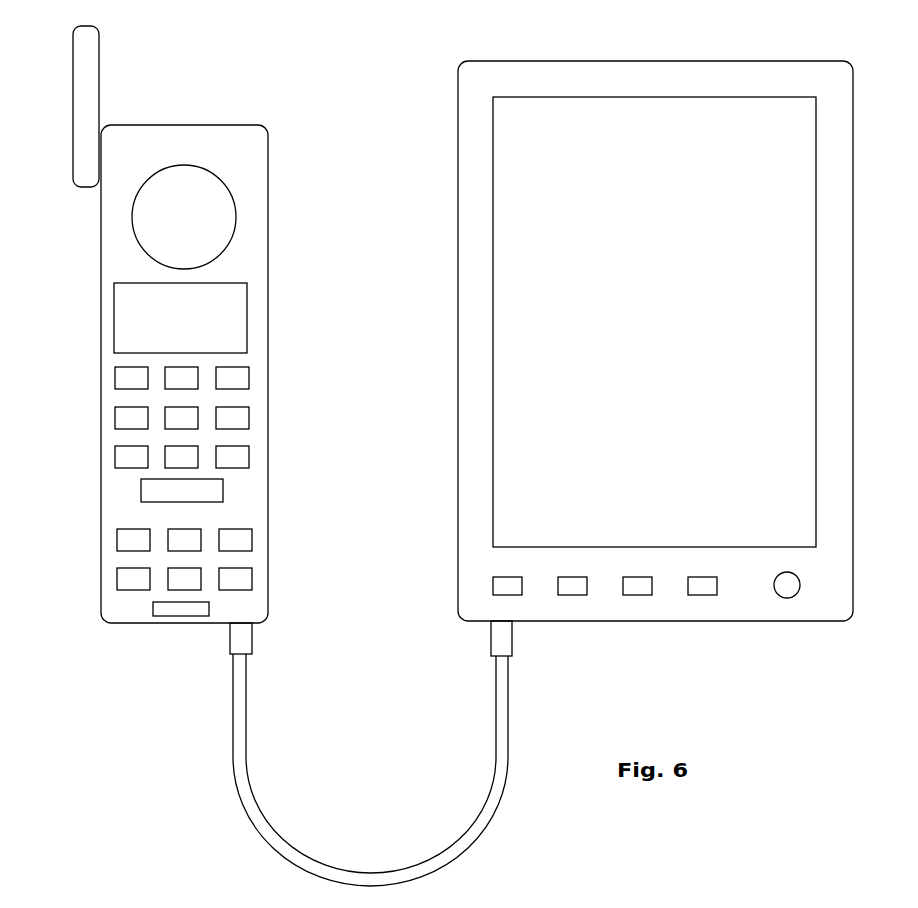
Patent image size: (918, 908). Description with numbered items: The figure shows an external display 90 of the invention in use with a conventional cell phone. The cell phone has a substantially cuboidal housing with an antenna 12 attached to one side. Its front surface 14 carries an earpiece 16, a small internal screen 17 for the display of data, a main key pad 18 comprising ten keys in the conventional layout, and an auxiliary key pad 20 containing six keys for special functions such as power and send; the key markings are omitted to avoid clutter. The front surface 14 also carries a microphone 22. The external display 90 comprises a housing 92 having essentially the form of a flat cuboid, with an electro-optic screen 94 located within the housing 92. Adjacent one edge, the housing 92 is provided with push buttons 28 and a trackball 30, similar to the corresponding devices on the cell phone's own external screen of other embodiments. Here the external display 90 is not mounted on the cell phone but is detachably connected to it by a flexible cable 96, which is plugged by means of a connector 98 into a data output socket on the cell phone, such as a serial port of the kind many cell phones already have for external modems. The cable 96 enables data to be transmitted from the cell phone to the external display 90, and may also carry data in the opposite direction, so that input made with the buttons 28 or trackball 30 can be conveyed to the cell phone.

The antenna 12 is at (87, 107).
The front surface 14 is at (137, 150).
The earpiece 16 is at (192, 208).
The internal screen 17 is at (192, 328).
The main key pad 18 is at (165, 408).
The auxiliary key pad 20 is at (183, 542).
The microphone 22 is at (183, 609).
The push buttons 28 is at (605, 635).
The trackball 30 is at (788, 585).
The external display 90 is at (595, 341).
The housing 92 is at (475, 403).
The electro-optic screen 94 is at (650, 323).
The flexible cable 96 is at (252, 782).
The connector 98 is at (241, 643).